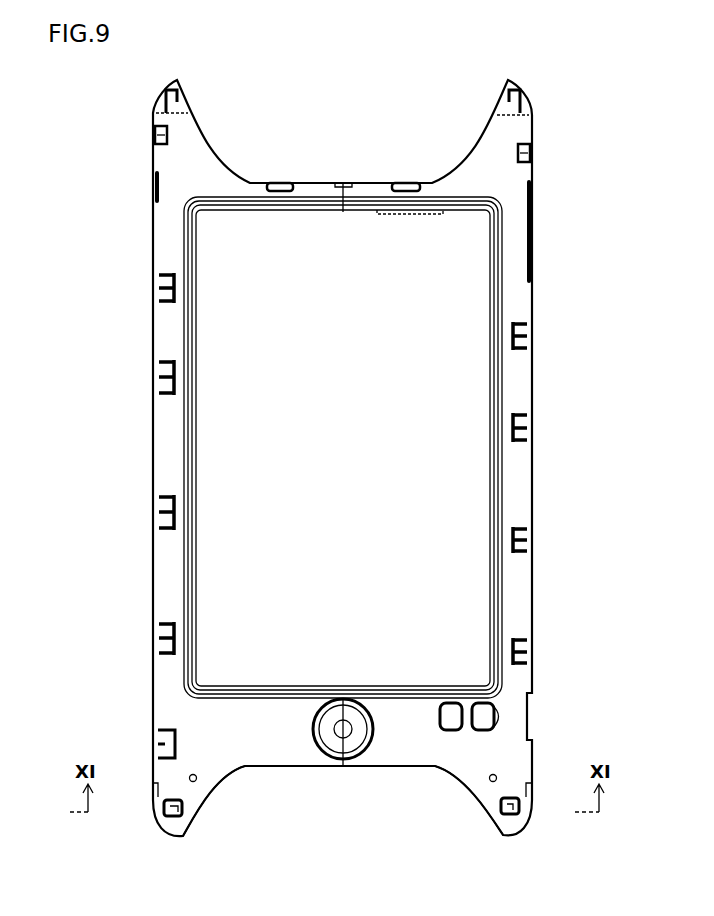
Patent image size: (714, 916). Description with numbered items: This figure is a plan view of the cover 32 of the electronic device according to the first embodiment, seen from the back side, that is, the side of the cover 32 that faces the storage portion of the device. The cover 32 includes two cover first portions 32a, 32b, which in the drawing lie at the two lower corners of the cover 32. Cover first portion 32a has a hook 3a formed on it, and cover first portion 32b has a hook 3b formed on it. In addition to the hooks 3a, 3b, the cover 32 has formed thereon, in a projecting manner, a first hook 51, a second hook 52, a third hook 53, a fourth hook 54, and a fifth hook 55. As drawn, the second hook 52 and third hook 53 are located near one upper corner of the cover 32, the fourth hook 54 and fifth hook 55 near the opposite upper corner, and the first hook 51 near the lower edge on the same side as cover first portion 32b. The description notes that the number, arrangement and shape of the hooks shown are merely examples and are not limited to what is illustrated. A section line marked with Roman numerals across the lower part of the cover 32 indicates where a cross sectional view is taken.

The cover 32 is at (451, 95).
The cover first portion 32a is at (495, 795).
The cover first portion 32b is at (190, 799).
The hook 3a is at (508, 822).
The hook 3b is at (178, 825).
The first hook 51 is at (158, 743).
The second hook 52 is at (155, 135).
The third hook 53 is at (158, 96).
The fourth hook 54 is at (531, 150).
The fifth hook 55 is at (530, 99).